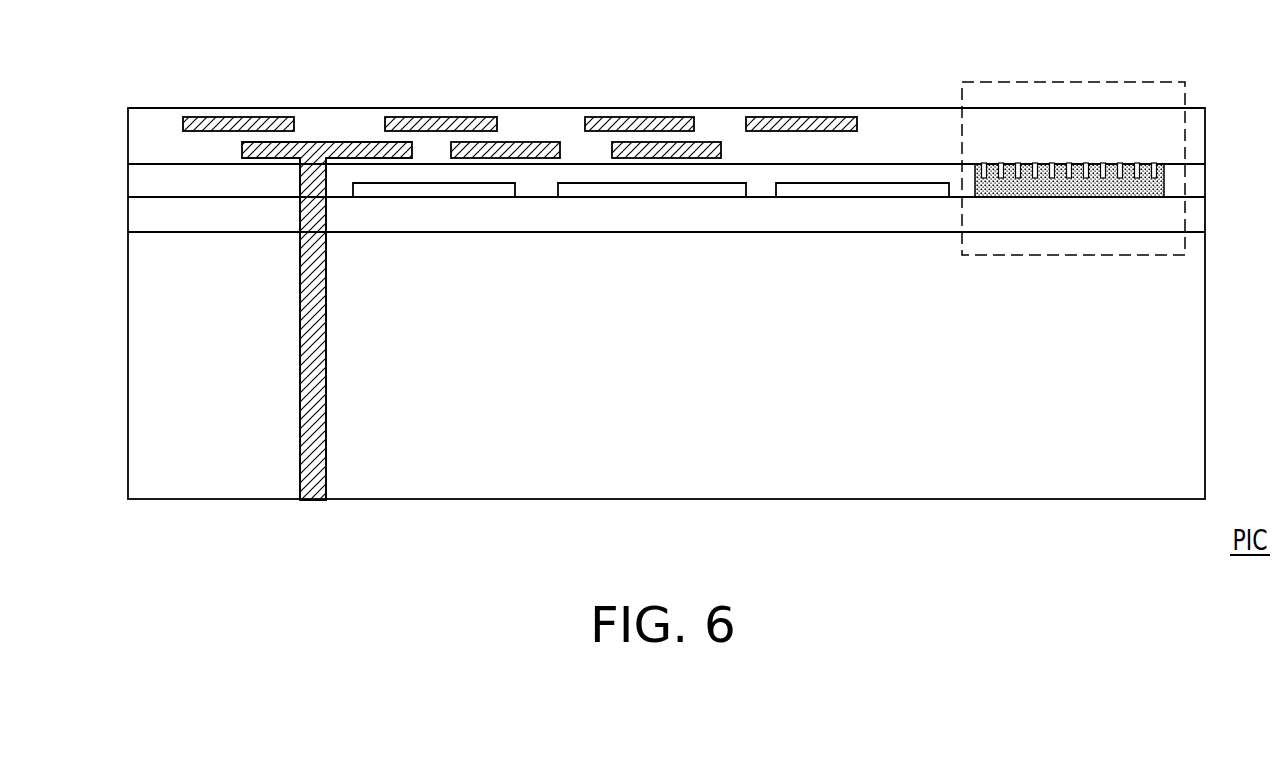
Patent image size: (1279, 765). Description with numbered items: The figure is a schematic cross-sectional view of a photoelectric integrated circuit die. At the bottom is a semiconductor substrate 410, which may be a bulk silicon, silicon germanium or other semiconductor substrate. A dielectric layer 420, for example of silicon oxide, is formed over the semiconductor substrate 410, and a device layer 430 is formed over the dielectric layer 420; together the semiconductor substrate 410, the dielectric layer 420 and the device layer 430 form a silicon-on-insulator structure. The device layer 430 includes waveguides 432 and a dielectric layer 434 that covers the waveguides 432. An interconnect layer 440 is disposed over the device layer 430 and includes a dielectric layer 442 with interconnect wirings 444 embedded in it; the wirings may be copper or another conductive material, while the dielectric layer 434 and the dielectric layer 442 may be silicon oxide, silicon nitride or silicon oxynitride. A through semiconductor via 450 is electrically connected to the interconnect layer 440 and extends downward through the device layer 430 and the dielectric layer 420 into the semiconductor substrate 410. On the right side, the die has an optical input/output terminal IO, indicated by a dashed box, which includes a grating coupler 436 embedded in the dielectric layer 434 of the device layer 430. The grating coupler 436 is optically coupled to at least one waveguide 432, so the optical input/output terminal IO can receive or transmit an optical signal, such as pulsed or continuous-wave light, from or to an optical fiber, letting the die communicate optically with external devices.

The semiconductor substrate 410 is at (130, 363).
The dielectric layer 420 is at (132, 217).
The device layer 430 is at (120, 165).
The waveguides 432 is at (480, 193).
The dielectric layer 434 is at (904, 172).
The grating coupler 436 is at (1160, 188).
The interconnect layer 440 is at (120, 110).
The dielectric layer 442 is at (334, 115).
The interconnect wirings 444 is at (538, 150).
The through semiconductor via 450 is at (315, 490).
The optical input/output terminal IO is at (1140, 78).